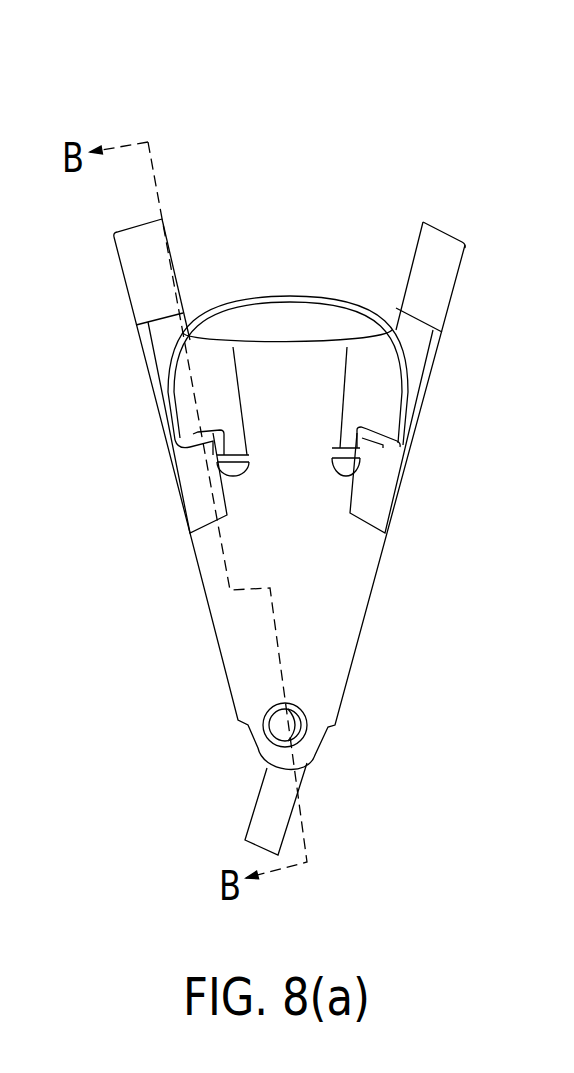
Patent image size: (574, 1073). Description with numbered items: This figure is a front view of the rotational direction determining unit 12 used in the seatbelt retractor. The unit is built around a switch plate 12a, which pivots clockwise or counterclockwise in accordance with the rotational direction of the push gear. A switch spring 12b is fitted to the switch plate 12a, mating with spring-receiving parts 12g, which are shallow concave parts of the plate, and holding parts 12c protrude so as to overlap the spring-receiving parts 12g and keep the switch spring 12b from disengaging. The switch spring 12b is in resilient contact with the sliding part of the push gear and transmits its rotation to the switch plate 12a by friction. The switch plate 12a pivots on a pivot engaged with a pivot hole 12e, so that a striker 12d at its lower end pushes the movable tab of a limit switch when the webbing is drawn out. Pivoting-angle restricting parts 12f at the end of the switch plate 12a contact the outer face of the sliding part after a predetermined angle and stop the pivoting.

The rotational direction determining unit 12 is at (355, 104).
The switch plate 12a is at (367, 600).
The switch spring 12b is at (230, 300).
The holding parts 12c is at (183, 480).
The striker 12d is at (263, 812).
The pivot hole 12e is at (288, 702).
The pivoting-angle restricting parts 12f is at (136, 279).
The spring-receiving parts 12g is at (234, 412).